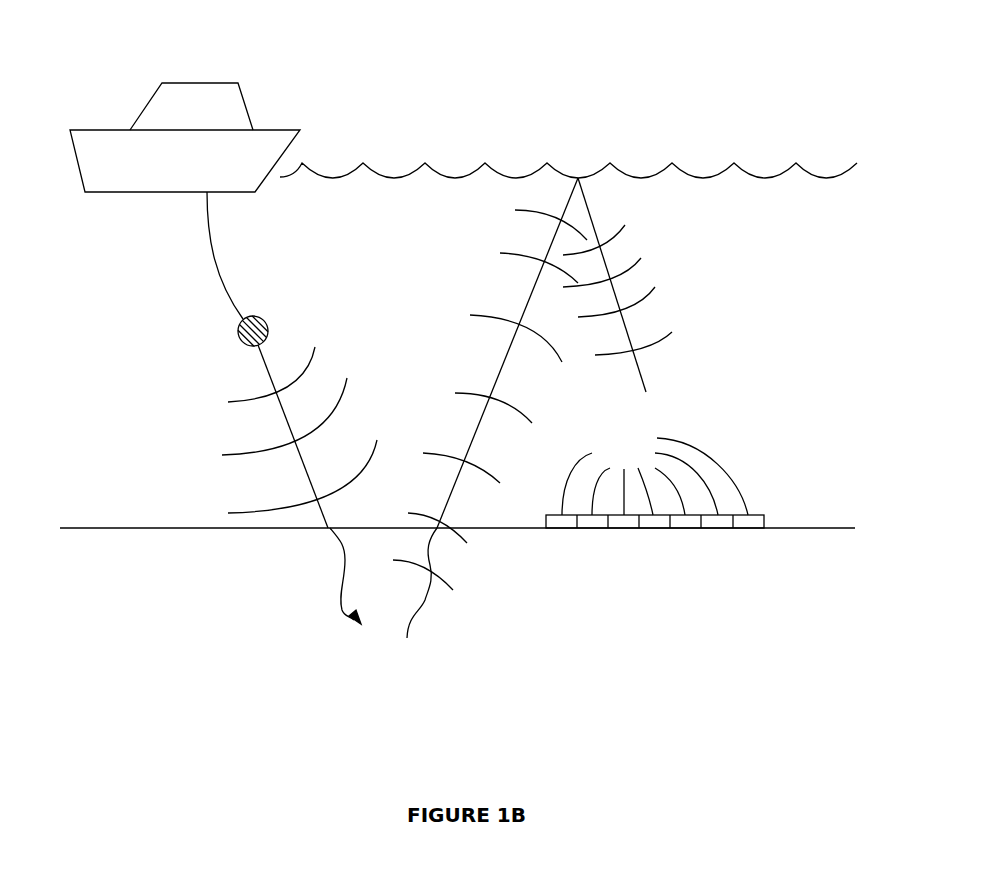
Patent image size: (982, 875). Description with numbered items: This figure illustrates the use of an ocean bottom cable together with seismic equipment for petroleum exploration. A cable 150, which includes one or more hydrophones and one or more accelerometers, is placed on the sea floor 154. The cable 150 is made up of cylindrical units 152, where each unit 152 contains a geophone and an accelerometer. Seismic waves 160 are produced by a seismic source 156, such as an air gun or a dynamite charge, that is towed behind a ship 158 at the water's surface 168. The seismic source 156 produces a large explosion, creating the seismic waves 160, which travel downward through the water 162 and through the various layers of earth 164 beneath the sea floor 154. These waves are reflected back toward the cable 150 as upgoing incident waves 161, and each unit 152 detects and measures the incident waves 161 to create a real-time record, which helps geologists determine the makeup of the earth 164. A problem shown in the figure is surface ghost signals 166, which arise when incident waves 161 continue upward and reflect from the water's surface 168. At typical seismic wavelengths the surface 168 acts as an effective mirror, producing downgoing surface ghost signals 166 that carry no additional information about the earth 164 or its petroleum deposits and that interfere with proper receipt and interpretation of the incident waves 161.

The cable 150 is at (754, 447).
The cylindrical unit 152 is at (655, 476).
The sea floor 154 is at (510, 530).
The seismic source 156 is at (253, 316).
The ship 158 is at (193, 83).
The seismic waves 160 is at (205, 362).
The incident waves 161 is at (470, 590).
The water 162 is at (154, 308).
The earth 164 is at (710, 617).
The surface ghost signals 166 is at (672, 209).
The water's surface 168 is at (641, 178).